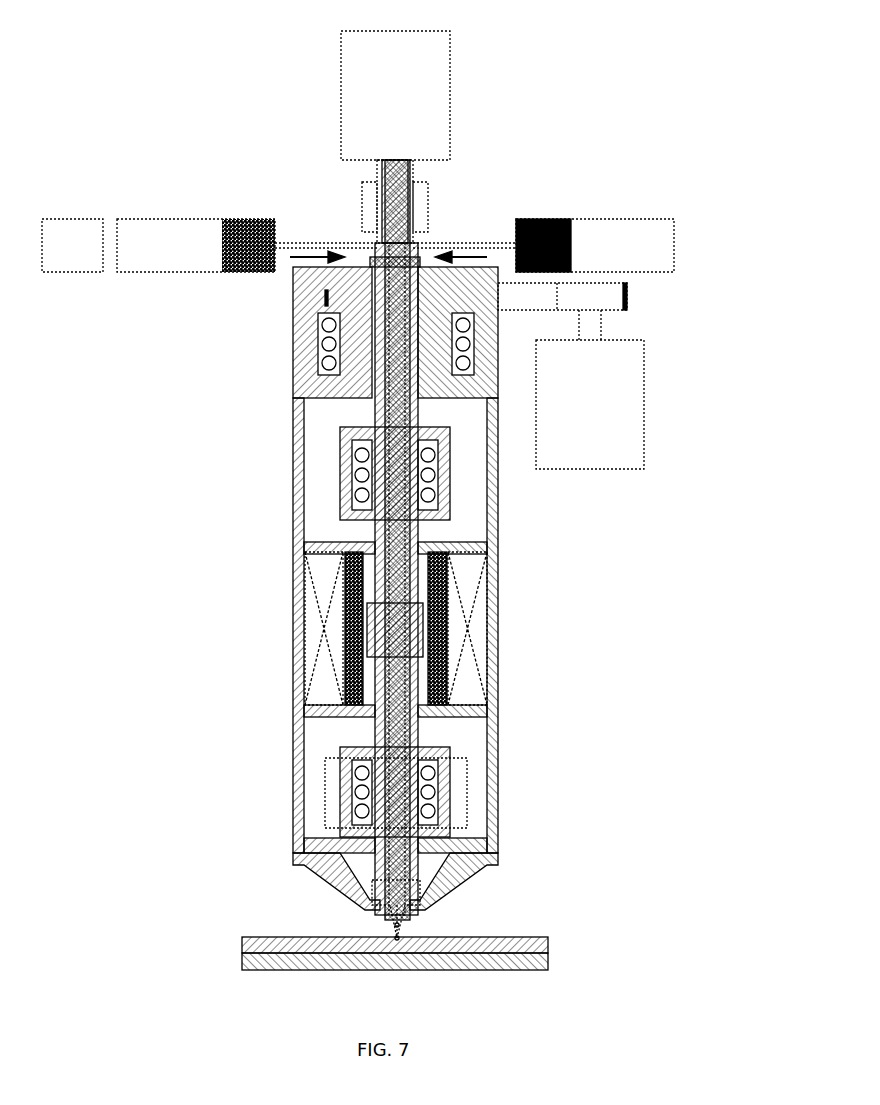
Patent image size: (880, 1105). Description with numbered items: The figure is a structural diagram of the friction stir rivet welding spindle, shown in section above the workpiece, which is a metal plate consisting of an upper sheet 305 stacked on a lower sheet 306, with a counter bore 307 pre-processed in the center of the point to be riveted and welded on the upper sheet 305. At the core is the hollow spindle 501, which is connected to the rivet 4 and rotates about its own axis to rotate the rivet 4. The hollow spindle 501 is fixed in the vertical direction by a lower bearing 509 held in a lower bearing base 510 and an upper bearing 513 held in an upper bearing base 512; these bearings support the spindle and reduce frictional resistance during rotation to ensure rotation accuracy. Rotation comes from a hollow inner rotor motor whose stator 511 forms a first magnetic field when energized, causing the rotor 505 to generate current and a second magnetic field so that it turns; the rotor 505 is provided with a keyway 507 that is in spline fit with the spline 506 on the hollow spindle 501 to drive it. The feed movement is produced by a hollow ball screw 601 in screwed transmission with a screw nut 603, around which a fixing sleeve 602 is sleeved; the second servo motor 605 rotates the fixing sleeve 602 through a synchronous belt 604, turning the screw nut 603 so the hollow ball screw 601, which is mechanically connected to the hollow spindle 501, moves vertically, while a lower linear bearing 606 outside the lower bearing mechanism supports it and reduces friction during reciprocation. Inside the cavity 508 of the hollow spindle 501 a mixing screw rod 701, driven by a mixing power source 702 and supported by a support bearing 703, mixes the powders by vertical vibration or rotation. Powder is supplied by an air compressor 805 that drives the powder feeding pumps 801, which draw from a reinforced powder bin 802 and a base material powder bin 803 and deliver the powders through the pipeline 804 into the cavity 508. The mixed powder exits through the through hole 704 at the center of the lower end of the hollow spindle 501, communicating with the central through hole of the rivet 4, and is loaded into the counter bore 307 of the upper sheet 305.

The rivet 4 is at (403, 922).
The upper sheet 305 is at (520, 947).
The lower sheet 306 is at (525, 966).
The counter bore 307 is at (400, 940).
The hollow spindle 501 is at (390, 905).
The rotor 505 is at (350, 655).
The spline 506 is at (420, 645).
The keyway 507 is at (425, 570).
The cavity 508 is at (385, 870).
The lower bearing 509 is at (430, 770).
The lower bearing base 510 is at (350, 790).
The stator 511 is at (318, 565).
The upper bearing base 512 is at (350, 500).
The upper bearing 513 is at (430, 465).
The hollow ball screw 601 is at (375, 410).
The fixing sleeve 602 is at (345, 353).
The screw nut 603 is at (360, 295).
The synchronous belt 604 is at (628, 300).
The second servo motor 605 is at (620, 390).
The lower linear bearing 606 is at (338, 818).
The mixing screw rod 701 is at (398, 690).
The mixing power source 702 is at (356, 64).
The support bearing 703 is at (422, 200).
The through hole 704 is at (400, 900).
The powder feeding pump 801 is at (172, 232).
The reinforced powder bin 802 is at (250, 232).
The base material powder bin 803 is at (560, 215).
The pipeline 804 is at (330, 242).
The air compressor 805 is at (66, 262).